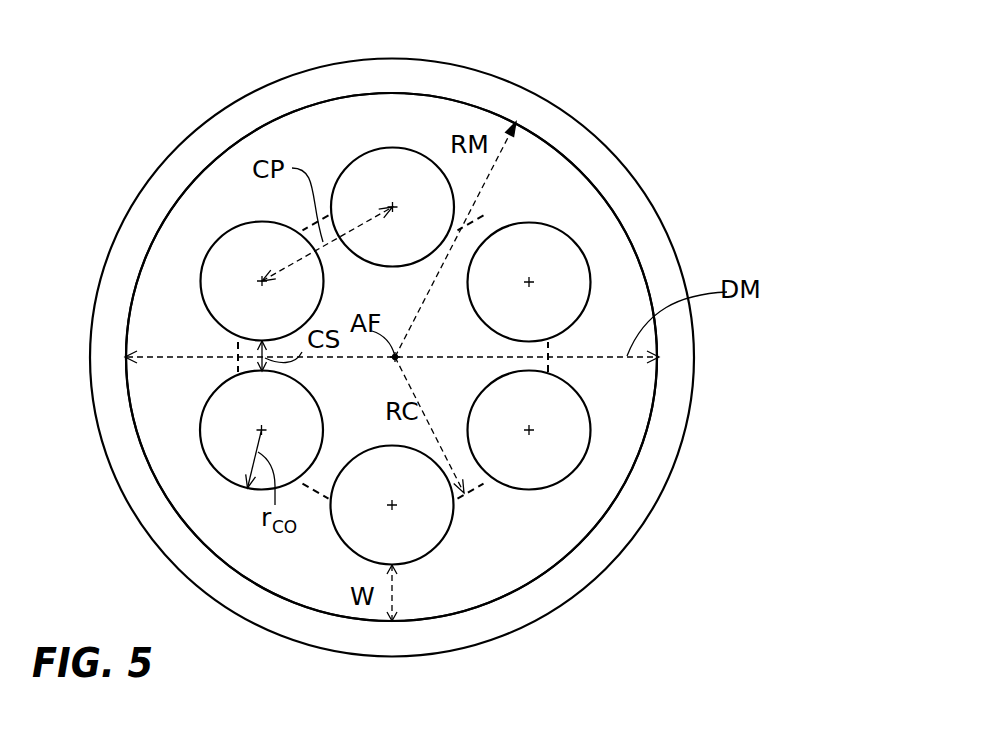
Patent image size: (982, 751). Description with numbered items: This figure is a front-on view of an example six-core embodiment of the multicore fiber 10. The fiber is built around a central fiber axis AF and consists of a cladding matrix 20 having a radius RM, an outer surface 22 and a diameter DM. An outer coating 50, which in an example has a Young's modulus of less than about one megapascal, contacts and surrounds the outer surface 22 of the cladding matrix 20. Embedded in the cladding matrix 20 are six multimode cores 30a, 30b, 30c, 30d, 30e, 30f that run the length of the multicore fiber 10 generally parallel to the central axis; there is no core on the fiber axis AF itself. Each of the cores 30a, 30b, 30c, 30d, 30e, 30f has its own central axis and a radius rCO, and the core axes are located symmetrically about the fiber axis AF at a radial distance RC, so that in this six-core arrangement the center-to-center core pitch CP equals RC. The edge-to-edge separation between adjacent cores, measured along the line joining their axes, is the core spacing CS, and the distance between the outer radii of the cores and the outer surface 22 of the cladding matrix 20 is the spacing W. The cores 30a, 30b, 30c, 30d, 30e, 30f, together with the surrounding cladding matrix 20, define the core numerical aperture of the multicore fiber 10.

The multicore fiber 10 is at (147, 122).
The cladding matrix 20 is at (573, 187).
The outer surface 22 is at (603, 188).
The outer coating 50 is at (567, 135).
The core 30a is at (393, 147).
The core 30b is at (535, 222).
The core 30c is at (573, 386).
The core 30d is at (451, 522).
The core 30e is at (207, 461).
The core 30f is at (201, 290).